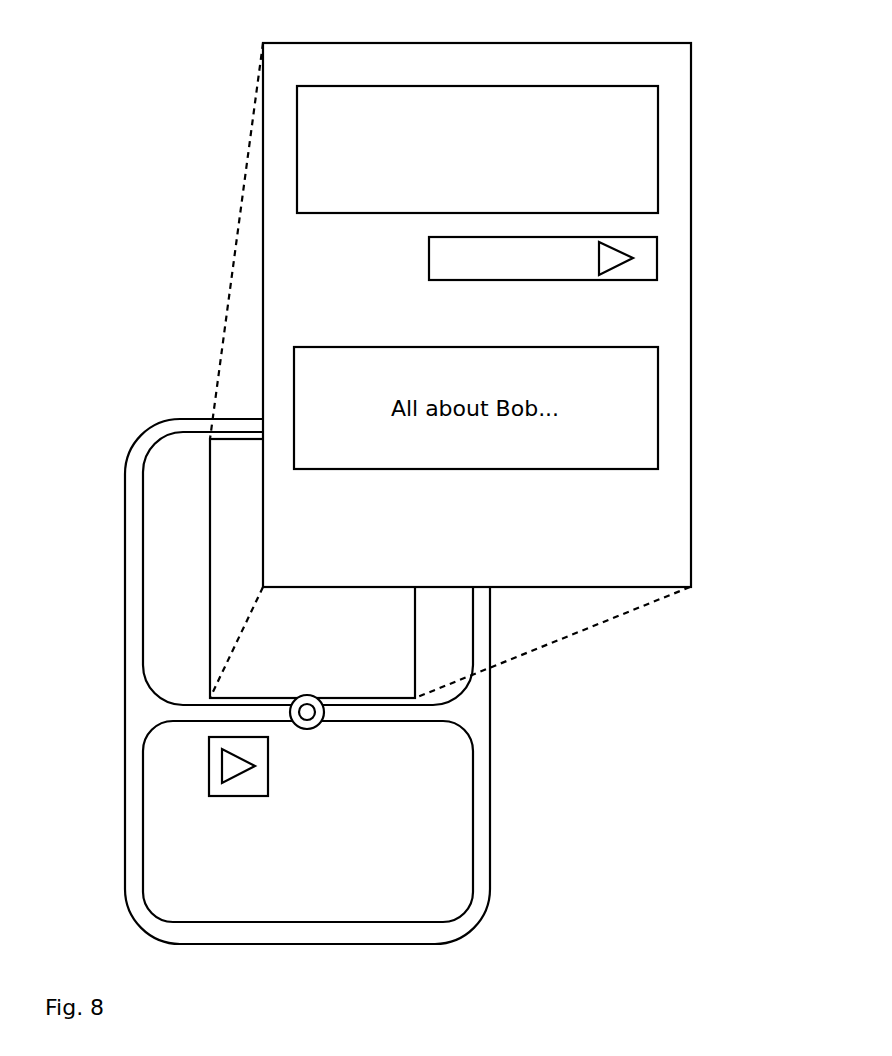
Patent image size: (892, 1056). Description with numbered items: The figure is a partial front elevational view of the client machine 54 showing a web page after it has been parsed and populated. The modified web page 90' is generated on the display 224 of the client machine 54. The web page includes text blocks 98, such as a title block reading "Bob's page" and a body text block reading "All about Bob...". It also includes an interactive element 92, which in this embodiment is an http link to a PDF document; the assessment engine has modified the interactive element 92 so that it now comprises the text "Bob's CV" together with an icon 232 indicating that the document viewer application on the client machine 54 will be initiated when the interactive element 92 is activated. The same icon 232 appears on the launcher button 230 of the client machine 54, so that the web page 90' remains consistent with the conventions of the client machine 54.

The client machine 54 is at (318, 950).
The display 224 is at (126, 568).
The modified web page 90' is at (221, 565).
The launcher button 230 is at (209, 766).
The text blocks 98 is at (297, 148).
The interactive element 92 is at (543, 237).
The icon 232 is at (612, 268).